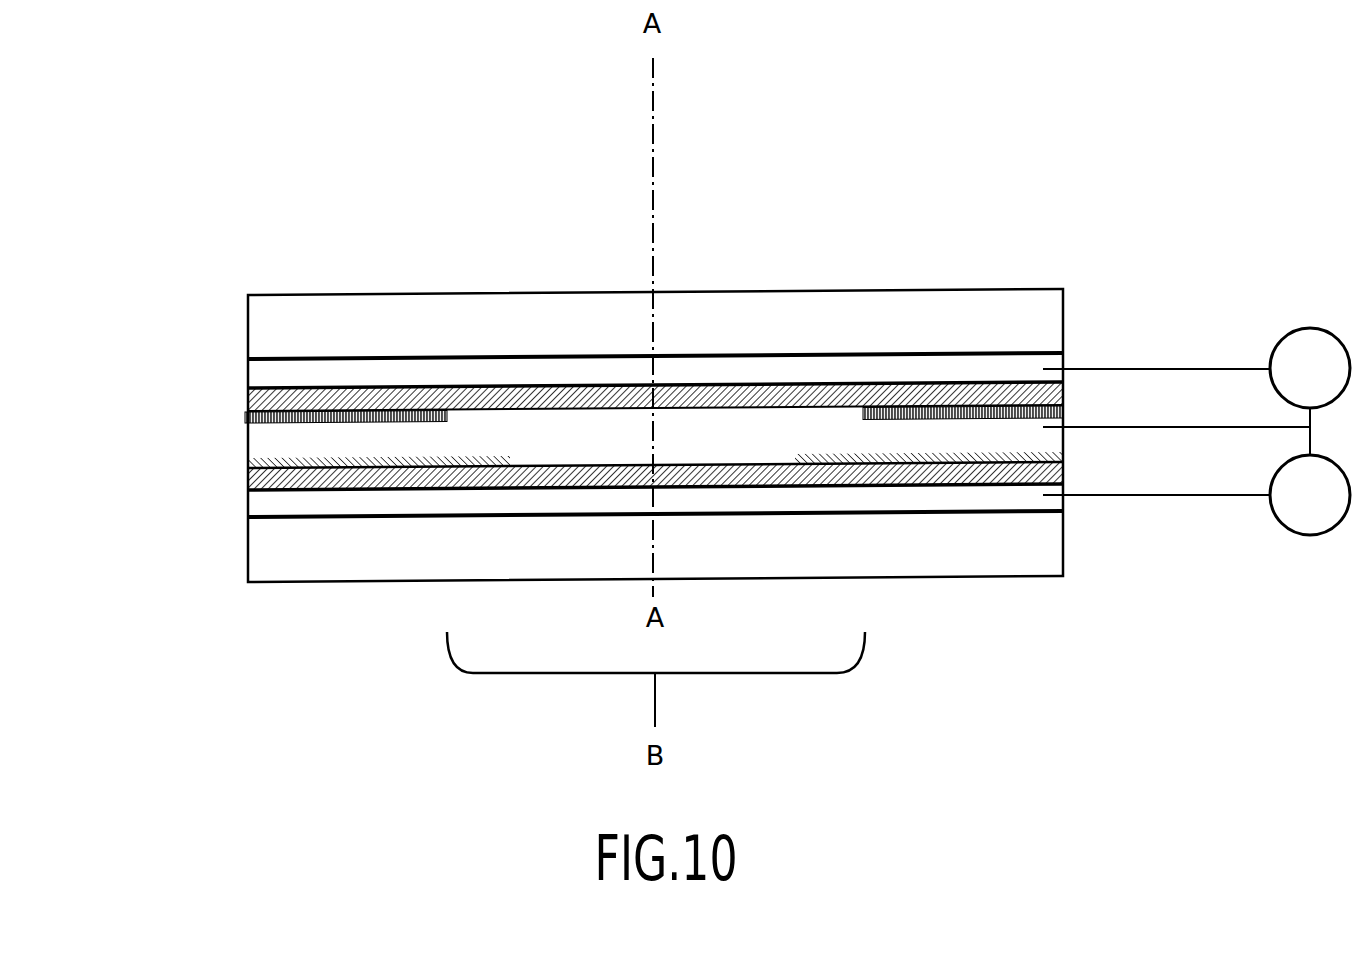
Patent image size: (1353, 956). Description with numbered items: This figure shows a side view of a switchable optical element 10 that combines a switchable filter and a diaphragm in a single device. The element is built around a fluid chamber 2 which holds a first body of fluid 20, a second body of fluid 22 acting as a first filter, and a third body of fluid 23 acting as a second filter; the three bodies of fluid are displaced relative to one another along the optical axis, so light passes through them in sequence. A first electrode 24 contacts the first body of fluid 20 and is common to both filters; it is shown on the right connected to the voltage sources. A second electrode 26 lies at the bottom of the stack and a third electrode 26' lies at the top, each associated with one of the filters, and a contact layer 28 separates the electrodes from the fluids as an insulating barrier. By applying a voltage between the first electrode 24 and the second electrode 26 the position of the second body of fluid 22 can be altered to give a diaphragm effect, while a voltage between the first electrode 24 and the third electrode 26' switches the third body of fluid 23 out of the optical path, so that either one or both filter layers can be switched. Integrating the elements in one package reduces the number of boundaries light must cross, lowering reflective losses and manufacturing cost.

The liquid crystal display device 10 is at (405, 197).
The fluid chamber 2 is at (1063, 552).
The third electrode 26' is at (561, 386).
The alignment layer 28 is at (252, 403).
The third body of fluid 23 is at (445, 420).
The second body of fluid 22 is at (512, 462).
The first body of fluid 20 is at (323, 446).
The second electrode 26 is at (561, 531).
The first electrode 24 is at (1187, 427).